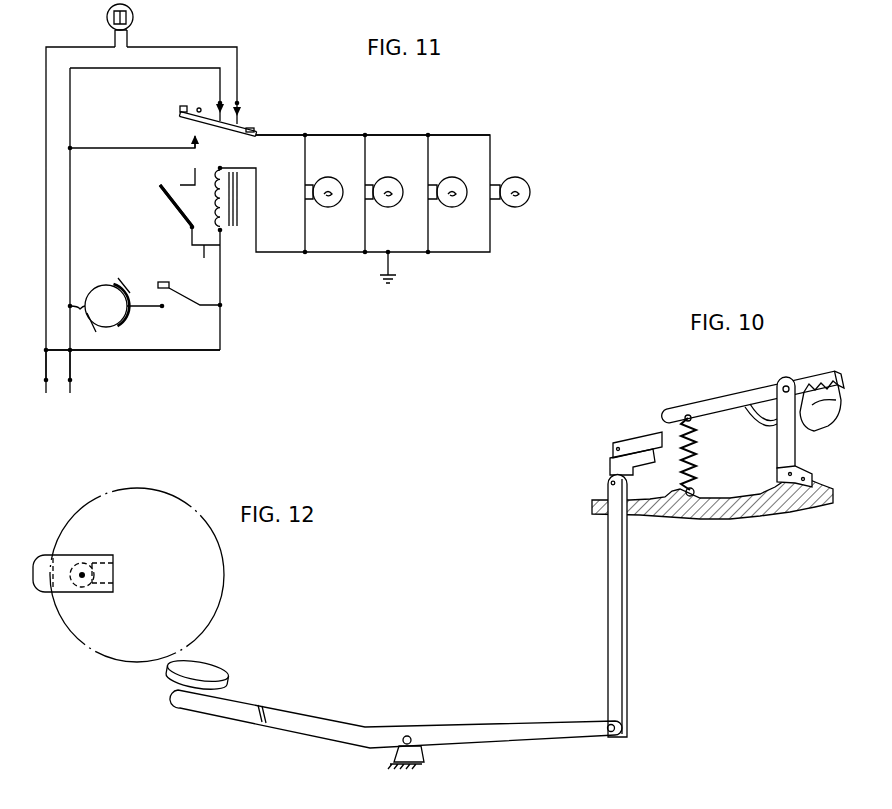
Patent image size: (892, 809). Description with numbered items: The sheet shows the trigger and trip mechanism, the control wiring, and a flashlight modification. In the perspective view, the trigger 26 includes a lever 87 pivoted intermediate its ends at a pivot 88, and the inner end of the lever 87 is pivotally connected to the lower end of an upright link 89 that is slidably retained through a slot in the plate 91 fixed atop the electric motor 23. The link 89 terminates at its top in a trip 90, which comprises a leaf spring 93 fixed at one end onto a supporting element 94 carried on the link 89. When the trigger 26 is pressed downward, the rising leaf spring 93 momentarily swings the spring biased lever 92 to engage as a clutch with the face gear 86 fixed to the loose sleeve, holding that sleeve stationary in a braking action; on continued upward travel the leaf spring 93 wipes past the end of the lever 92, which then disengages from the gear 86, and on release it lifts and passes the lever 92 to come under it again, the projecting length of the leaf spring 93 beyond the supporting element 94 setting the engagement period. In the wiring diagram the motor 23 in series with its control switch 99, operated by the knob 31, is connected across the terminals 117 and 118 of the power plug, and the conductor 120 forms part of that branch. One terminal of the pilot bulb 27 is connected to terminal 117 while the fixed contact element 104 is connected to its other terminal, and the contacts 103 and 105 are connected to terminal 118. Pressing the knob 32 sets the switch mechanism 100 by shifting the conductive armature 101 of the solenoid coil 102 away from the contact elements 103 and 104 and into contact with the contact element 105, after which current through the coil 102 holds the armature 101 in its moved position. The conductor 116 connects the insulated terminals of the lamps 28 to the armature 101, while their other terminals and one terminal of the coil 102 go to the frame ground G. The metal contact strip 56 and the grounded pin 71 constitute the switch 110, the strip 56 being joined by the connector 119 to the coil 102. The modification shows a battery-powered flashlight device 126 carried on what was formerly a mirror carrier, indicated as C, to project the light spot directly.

In FIG. 11, the light bulb 27 is at (133, 17).
In FIG. 11, the knob 32 is at (183, 106).
In FIG. 11, the fixed contact element 103 is at (217, 119).
In FIG. 11, the fixed contact element 104 is at (245, 112).
In FIG. 11, the conductive armature 101 is at (247, 132).
In FIG. 11, the fixed contact element 105 is at (192, 140).
In FIG. 11, the switch mechanism 100 is at (221, 139).
In FIG. 11, the conductor 116 is at (293, 134).
In FIG. 11, the light bulb 28 is at (329, 178).
In FIG. 11, the ground G is at (396, 283).
In FIG. 11, the pin 71 is at (178, 184).
In FIG. 11, the switch 110 is at (157, 179).
In FIG. 11, the contact strip 56 is at (163, 194).
In FIG. 11, the solenoid coil 102 is at (211, 198).
In FIG. 11, the connector 119 is at (205, 264).
In FIG. 11, the electric motor 23 is at (121, 324).
In FIG. 11, the knob 31 is at (167, 281).
In FIG. 11, the switch 99 is at (173, 301).
In FIG. 11, the conductor 120 is at (181, 352).
In FIG. 11, the terminal 117 is at (44, 393).
In FIG. 11, the terminal 118 is at (70, 394).
In FIG. 12, the carrier C is at (209, 563).
In FIG. 12, the flashlight device 126 is at (94, 552).
In FIG. 10, the plate 91 is at (727, 505).
In FIG. 10, the spring biased lever 92 is at (737, 392).
In FIG. 10, the face gear 86 is at (822, 426).
In FIG. 10, the trip 90 is at (645, 424).
In FIG. 10, the leaf spring 93 is at (630, 440).
In FIG. 10, the supporting element 94 is at (639, 460).
In FIG. 10, the upright link 89 is at (617, 551).
In FIG. 10, the lever 87 is at (500, 737).
In FIG. 10, the pivot 88 is at (412, 736).
In FIG. 10, the trigger 26 is at (212, 672).